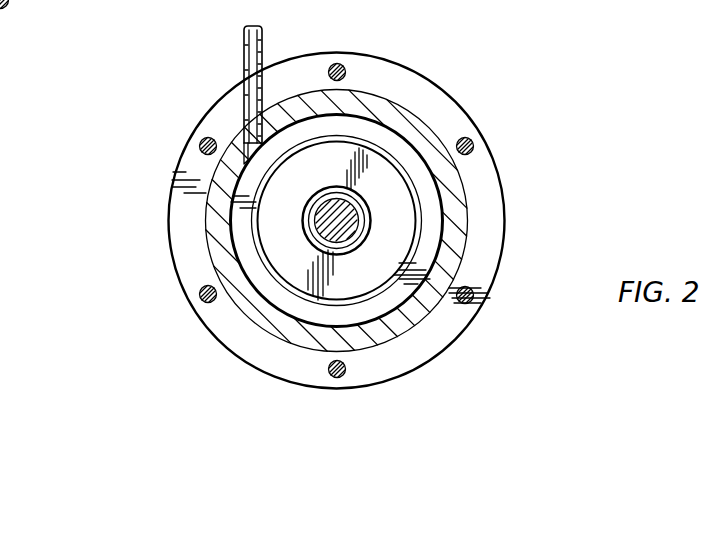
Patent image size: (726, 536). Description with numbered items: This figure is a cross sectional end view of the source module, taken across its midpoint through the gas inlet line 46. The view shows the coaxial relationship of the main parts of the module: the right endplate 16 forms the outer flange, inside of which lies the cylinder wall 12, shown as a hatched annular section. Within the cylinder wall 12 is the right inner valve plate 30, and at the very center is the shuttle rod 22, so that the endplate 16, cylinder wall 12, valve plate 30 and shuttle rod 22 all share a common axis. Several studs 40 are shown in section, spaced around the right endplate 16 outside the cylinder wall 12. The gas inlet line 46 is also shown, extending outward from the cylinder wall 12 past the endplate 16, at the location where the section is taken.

The cylinder wall 12 is at (382, 106).
The right endplate 16 is at (250, 345).
The shuttle rod 22 is at (358, 220).
The right inner valve plate 30 is at (387, 172).
The studs 40 is at (339, 63).
The gas inlet line 46 is at (243, 47).